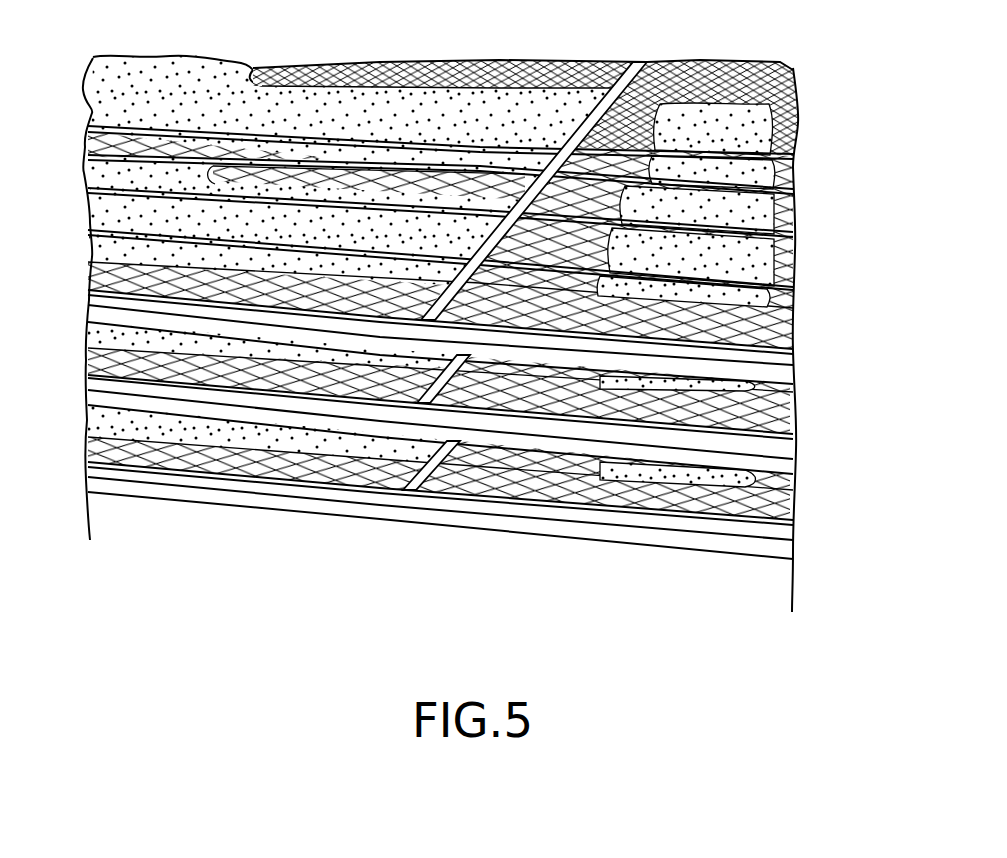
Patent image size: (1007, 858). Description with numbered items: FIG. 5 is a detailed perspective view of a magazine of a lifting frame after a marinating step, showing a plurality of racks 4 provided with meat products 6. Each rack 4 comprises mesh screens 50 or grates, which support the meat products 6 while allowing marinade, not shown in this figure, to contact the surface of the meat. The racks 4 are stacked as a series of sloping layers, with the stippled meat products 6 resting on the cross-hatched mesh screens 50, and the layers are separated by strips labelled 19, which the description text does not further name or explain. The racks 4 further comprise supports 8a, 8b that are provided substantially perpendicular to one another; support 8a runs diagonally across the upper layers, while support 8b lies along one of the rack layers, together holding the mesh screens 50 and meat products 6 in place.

The rack 4 is at (660, 555).
The meat product 6 is at (219, 67).
The support 8a is at (631, 75).
The support 8b is at (778, 286).
The spacer strip 19 is at (778, 369).
The mesh screen 50 is at (710, 66).